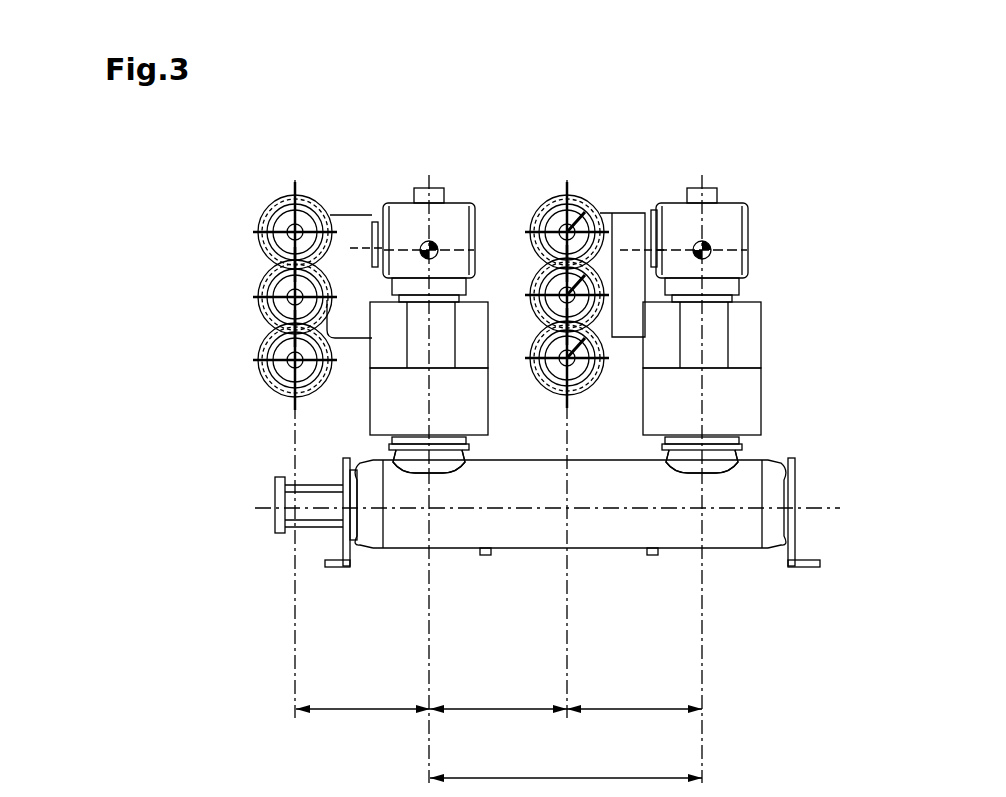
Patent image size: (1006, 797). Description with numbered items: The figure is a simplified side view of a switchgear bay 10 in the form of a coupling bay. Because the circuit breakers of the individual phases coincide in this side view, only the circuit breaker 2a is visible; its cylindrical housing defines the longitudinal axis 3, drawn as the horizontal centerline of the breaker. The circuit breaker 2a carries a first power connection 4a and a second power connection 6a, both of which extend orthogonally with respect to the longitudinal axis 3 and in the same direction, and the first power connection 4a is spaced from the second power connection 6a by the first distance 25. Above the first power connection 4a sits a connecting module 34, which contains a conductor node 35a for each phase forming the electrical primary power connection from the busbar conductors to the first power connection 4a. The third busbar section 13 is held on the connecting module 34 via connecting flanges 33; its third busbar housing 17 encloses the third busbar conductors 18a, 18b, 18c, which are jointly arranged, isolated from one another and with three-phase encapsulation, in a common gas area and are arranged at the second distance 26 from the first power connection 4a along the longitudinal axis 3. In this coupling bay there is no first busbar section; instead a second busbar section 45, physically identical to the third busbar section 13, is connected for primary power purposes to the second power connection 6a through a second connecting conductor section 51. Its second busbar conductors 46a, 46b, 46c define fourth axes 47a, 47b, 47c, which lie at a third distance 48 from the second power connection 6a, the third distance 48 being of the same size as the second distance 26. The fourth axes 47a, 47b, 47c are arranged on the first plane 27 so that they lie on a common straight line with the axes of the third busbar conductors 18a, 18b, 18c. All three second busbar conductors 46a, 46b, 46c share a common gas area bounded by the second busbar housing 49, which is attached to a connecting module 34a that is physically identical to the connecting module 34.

The switchgear bay 10 is at (908, 173).
The third busbar section 13 is at (270, 185).
The third busbar housing 17 is at (335, 215).
The third busbar conductor 18a is at (288, 232).
The third busbar conductor 18b is at (290, 297).
The third busbar conductor 18c is at (288, 360).
The connecting flange 33 is at (345, 245).
The connecting module 34 is at (418, 190).
The connecting module 34a is at (732, 205).
The conductor node 35a is at (418, 240).
The second busbar section 45 is at (563, 160).
The second busbar conductor 46a is at (545, 225).
The second busbar conductor 46b is at (535, 290).
The second busbar conductor 46c is at (540, 350).
The fourth axis 47a is at (582, 215).
The fourth axis 47b is at (585, 280).
The fourth axis 47c is at (581, 345).
The second busbar housing 49 is at (622, 330).
The second connecting conductor section 51 is at (665, 240).
The circuit breaker 2a is at (752, 530).
The longitudinal axis 3 is at (838, 507).
The first power connection 4a is at (415, 462).
The second power connection 6a is at (717, 460).
The first plane 27 is at (550, 537).
The first distance 25 is at (582, 776).
The second distance 26 is at (358, 705).
The third distance 48 is at (636, 705).